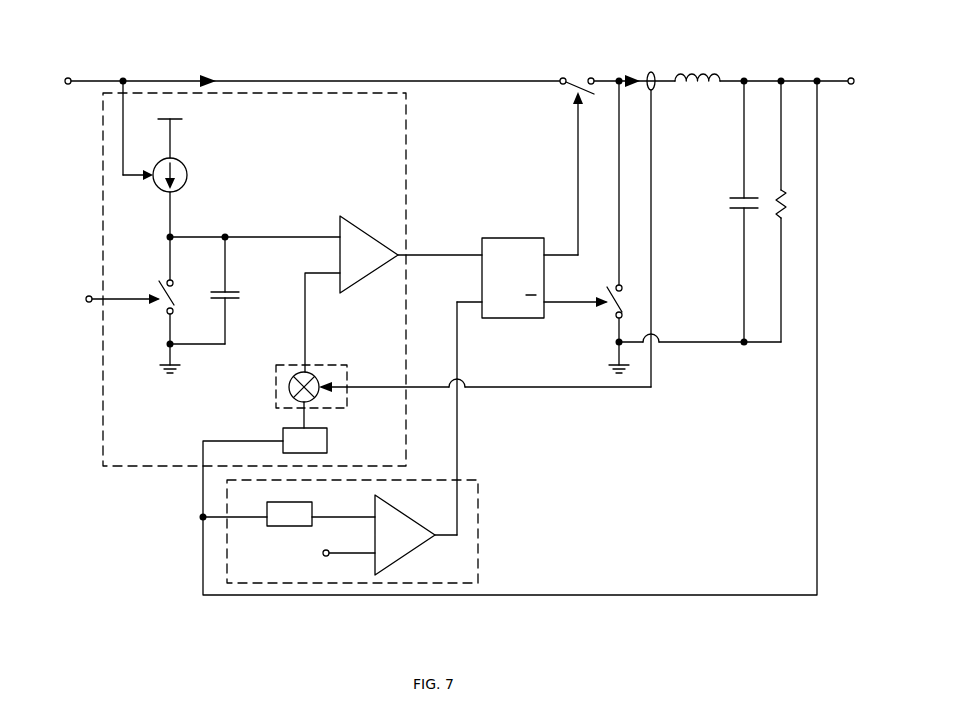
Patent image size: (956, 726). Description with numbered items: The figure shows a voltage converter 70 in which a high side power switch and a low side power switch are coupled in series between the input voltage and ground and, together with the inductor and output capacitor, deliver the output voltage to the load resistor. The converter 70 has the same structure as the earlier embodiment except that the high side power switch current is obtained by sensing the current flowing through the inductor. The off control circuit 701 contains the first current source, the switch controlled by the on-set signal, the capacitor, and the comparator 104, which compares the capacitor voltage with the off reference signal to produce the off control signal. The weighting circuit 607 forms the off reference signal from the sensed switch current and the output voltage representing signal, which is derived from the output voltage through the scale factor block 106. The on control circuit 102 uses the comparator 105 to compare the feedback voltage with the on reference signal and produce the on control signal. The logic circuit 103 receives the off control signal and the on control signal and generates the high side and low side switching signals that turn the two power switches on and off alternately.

The voltage converter 70 is at (454, 301).
The off control circuit 701 is at (228, 273).
The comparator 104 is at (369, 254).
The logic circuit 103 is at (520, 228).
The weighting circuit 607 is at (276, 373).
The scale factor block K1 106 is at (327, 445).
The comparator 105 is at (405, 535).
The on control circuit 102 is at (352, 531).